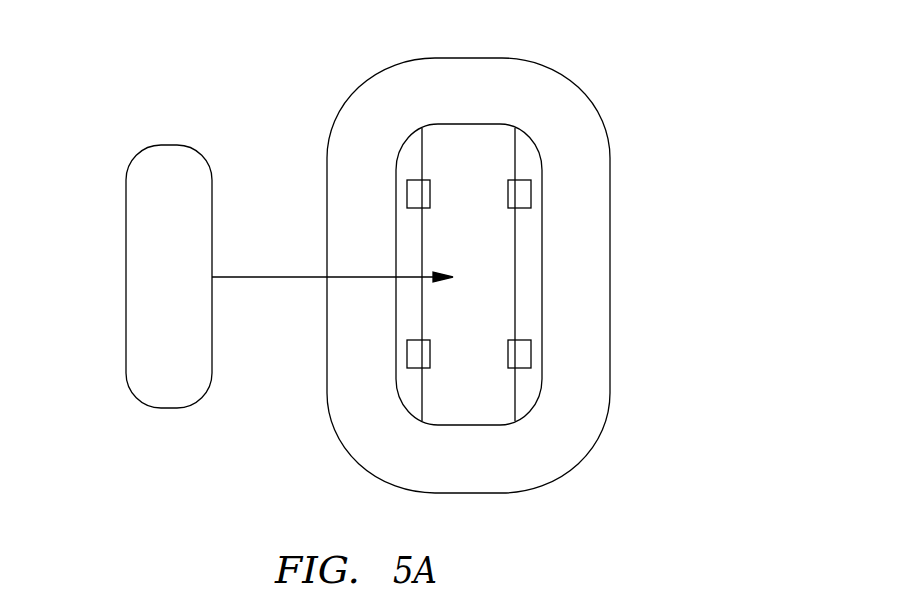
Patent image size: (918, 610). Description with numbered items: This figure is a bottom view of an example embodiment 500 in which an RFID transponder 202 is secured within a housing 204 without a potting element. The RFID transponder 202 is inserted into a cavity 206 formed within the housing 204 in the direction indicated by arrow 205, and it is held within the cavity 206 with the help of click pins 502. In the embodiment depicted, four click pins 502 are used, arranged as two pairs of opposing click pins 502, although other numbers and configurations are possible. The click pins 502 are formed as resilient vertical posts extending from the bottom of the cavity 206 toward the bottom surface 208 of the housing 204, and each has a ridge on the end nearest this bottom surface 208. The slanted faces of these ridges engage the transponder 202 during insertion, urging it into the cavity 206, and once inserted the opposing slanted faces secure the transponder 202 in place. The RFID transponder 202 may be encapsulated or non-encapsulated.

The example embodiment 500 is at (655, 60).
The RFID transponder 202 is at (158, 144).
The housing 204 is at (478, 58).
The arrow 205 is at (265, 276).
The cavity 206 is at (490, 174).
The bottom surface 208 is at (468, 251).
The click pins 502 is at (509, 209).